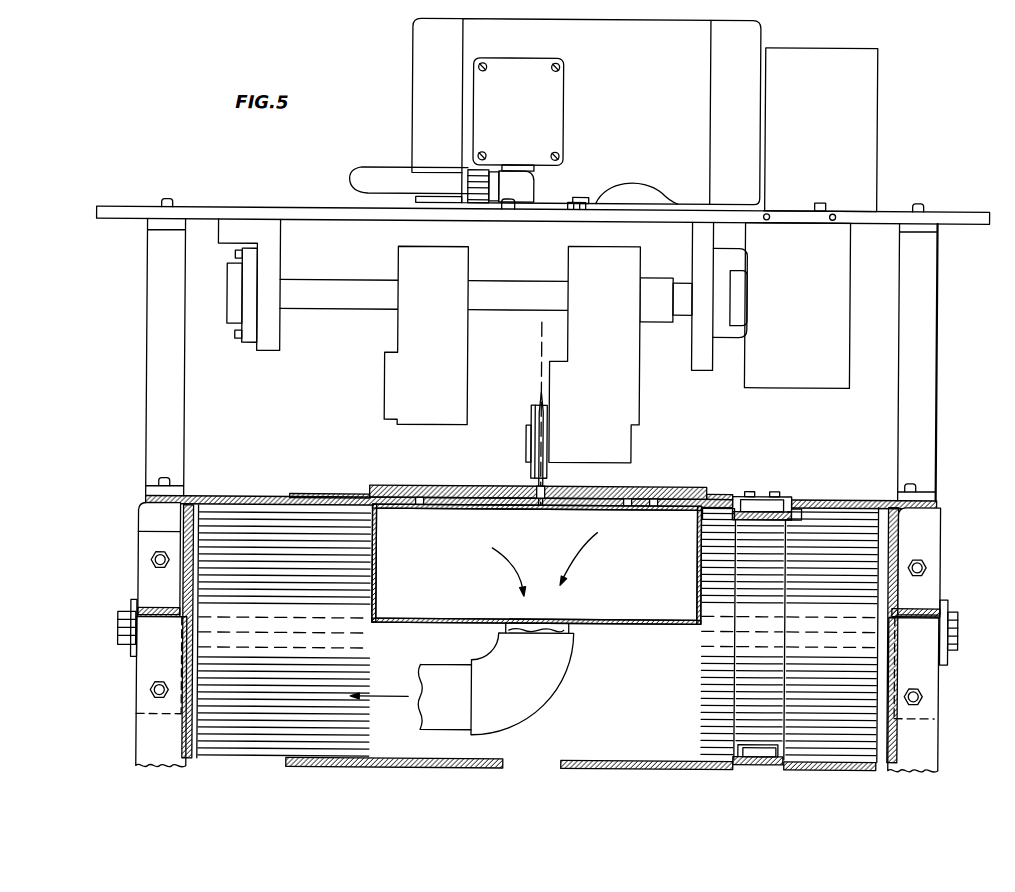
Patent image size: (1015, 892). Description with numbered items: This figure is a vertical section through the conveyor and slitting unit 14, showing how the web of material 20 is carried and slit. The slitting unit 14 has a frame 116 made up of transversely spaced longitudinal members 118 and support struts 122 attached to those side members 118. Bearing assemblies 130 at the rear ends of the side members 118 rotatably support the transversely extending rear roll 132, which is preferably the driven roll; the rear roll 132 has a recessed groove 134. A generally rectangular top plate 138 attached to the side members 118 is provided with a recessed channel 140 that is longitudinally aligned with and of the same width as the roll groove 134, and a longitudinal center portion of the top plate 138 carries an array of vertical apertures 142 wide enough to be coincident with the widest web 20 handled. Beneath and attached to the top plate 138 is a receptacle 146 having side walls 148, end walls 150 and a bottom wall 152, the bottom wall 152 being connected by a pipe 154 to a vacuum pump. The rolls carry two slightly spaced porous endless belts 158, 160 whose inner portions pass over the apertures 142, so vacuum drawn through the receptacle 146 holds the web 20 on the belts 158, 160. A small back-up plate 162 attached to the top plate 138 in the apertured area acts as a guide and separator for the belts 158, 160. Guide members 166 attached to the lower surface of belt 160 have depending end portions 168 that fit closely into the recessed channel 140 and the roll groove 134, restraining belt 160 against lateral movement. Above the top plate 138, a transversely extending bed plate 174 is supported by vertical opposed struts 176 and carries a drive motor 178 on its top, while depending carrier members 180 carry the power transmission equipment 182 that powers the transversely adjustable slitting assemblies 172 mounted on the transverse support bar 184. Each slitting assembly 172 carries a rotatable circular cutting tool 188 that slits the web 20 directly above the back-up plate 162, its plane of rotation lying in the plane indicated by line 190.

The slitting unit 14 is at (380, 90).
The web of material 20 is at (414, 490).
The frame 116 is at (948, 566).
The longitudinal members 118 is at (138, 531).
The support struts 122 is at (147, 753).
The bearing assemblies 130 is at (128, 661).
The rear roll 132 is at (230, 706).
The recessed groove 134 is at (777, 595).
The top plate 138 is at (833, 502).
The recessed channel 140 is at (795, 528).
The vertical apertures 142 is at (420, 507).
The receptacle 146 is at (418, 628).
The side walls 148 is at (373, 585).
The end walls 150 is at (459, 584).
The bottom wall 152 is at (618, 625).
The pipe 154 is at (517, 699).
The endless belt 158 is at (318, 494).
The endless belt 160 is at (720, 500).
The back-up plate 162 is at (518, 493).
The guide members 166 is at (763, 497).
The depending end portions 168 is at (787, 514).
The slitting assemblies 172 is at (447, 346).
The bed plate 174 is at (965, 209).
The vertical struts 176 is at (161, 357).
The drive motor 178 is at (646, 98).
The carrier members 180 is at (272, 241).
The power transmission equipment 182 is at (815, 150).
The support bar 184 is at (359, 302).
The cutting tool 188 is at (537, 396).
The plane of rotation line 190 is at (540, 338).